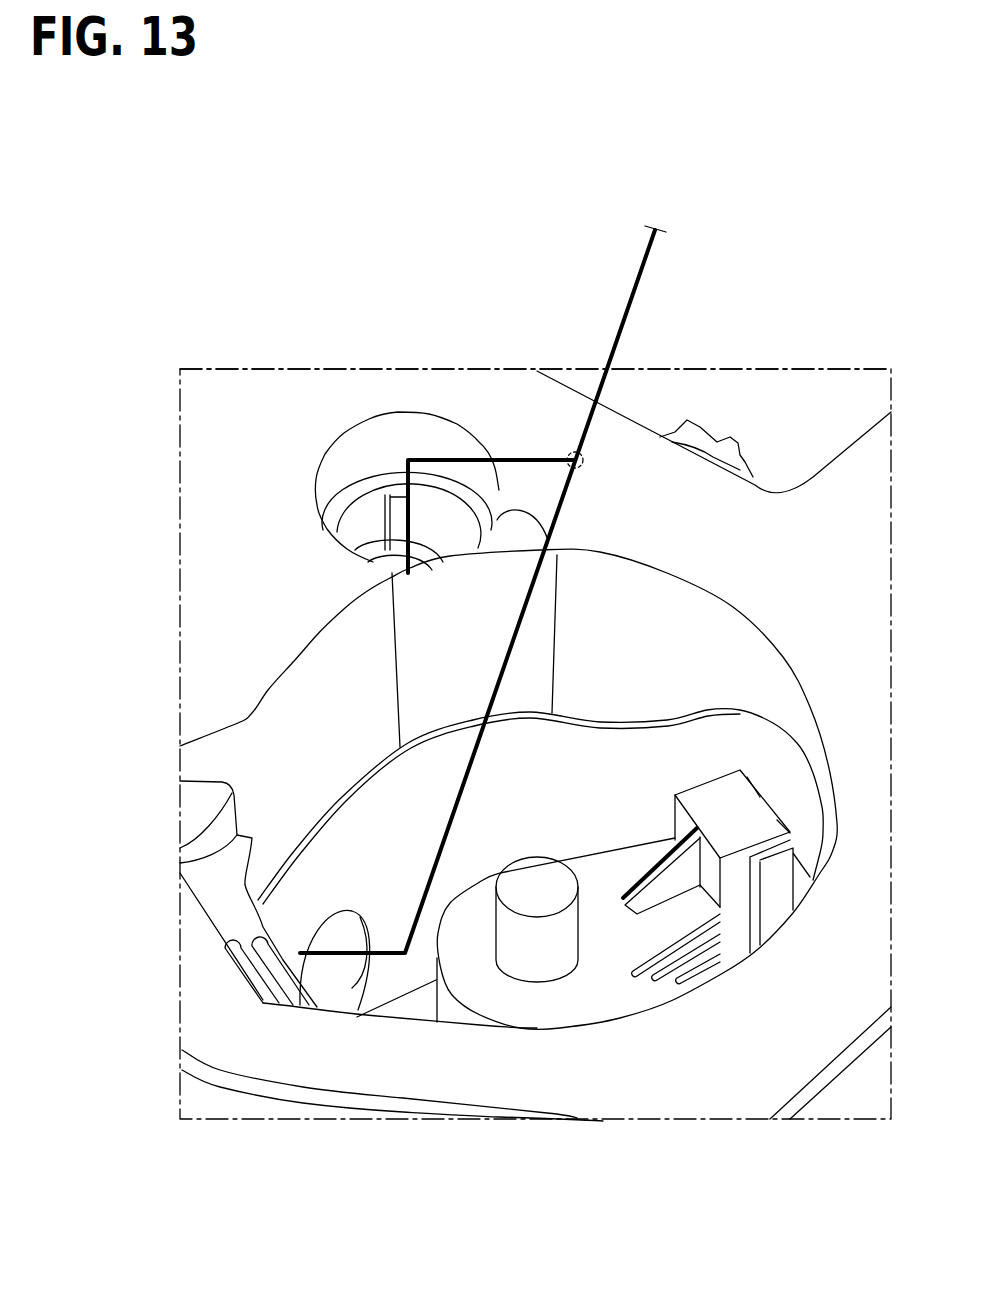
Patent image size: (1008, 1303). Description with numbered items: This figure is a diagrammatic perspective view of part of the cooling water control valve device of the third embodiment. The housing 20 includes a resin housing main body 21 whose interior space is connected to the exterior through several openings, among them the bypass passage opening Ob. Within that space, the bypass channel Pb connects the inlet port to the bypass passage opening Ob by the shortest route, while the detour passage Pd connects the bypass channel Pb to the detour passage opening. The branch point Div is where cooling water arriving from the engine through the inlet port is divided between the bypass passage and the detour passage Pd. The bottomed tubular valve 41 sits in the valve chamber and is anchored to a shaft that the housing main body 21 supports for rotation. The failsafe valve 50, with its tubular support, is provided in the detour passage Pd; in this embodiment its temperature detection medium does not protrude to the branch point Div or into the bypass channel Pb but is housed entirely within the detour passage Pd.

The housing 20 is at (199, 371).
The housing main body 21 is at (257, 388).
The failsafe valve 50 is at (396, 470).
The valve 41 is at (607, 873).
The detour passage Pd is at (437, 458).
The branch point Div is at (567, 455).
The bypass channel Pb is at (518, 634).
The bypass passage opening Ob is at (345, 978).